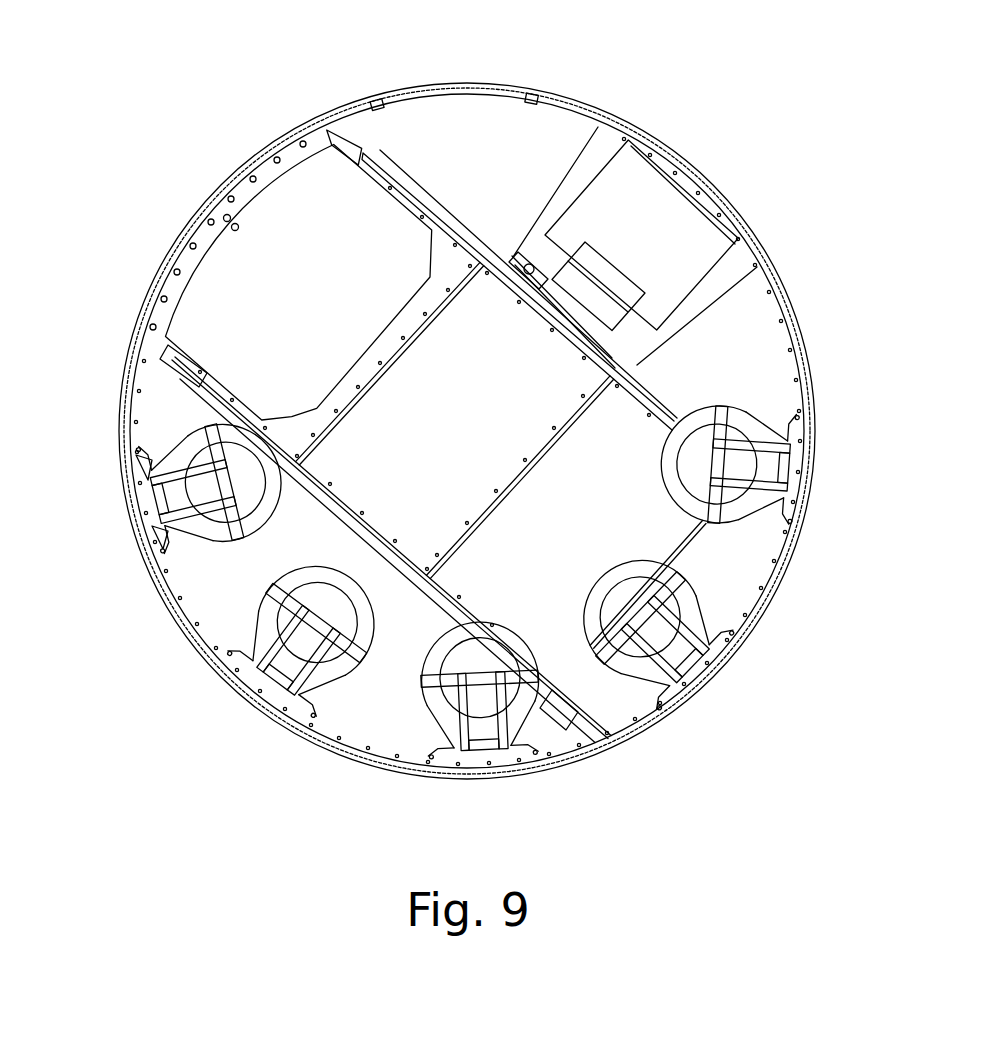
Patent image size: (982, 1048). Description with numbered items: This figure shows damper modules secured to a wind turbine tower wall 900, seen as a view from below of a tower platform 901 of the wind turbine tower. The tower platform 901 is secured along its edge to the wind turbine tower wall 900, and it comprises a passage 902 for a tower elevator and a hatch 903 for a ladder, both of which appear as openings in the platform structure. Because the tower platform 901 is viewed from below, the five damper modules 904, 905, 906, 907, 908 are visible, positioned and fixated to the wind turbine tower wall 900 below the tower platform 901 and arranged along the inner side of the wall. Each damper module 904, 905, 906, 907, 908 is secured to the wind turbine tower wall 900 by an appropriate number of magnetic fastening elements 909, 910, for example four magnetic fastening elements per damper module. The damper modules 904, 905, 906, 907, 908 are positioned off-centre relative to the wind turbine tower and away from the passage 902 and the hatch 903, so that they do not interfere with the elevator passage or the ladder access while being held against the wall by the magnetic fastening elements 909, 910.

The wind turbine tower wall 900 is at (793, 290).
The tower platform 901 is at (491, 118).
The passage 902 is at (262, 214).
The hatch 903 is at (683, 220).
The damper module 904 is at (220, 523).
The damper module 905 is at (338, 708).
The damper module 906 is at (510, 697).
The damper module 907 is at (675, 600).
The damper module 908 is at (737, 436).
The magnetic fastening element 909 is at (143, 473).
The magnetic fastening element 910 is at (158, 536).